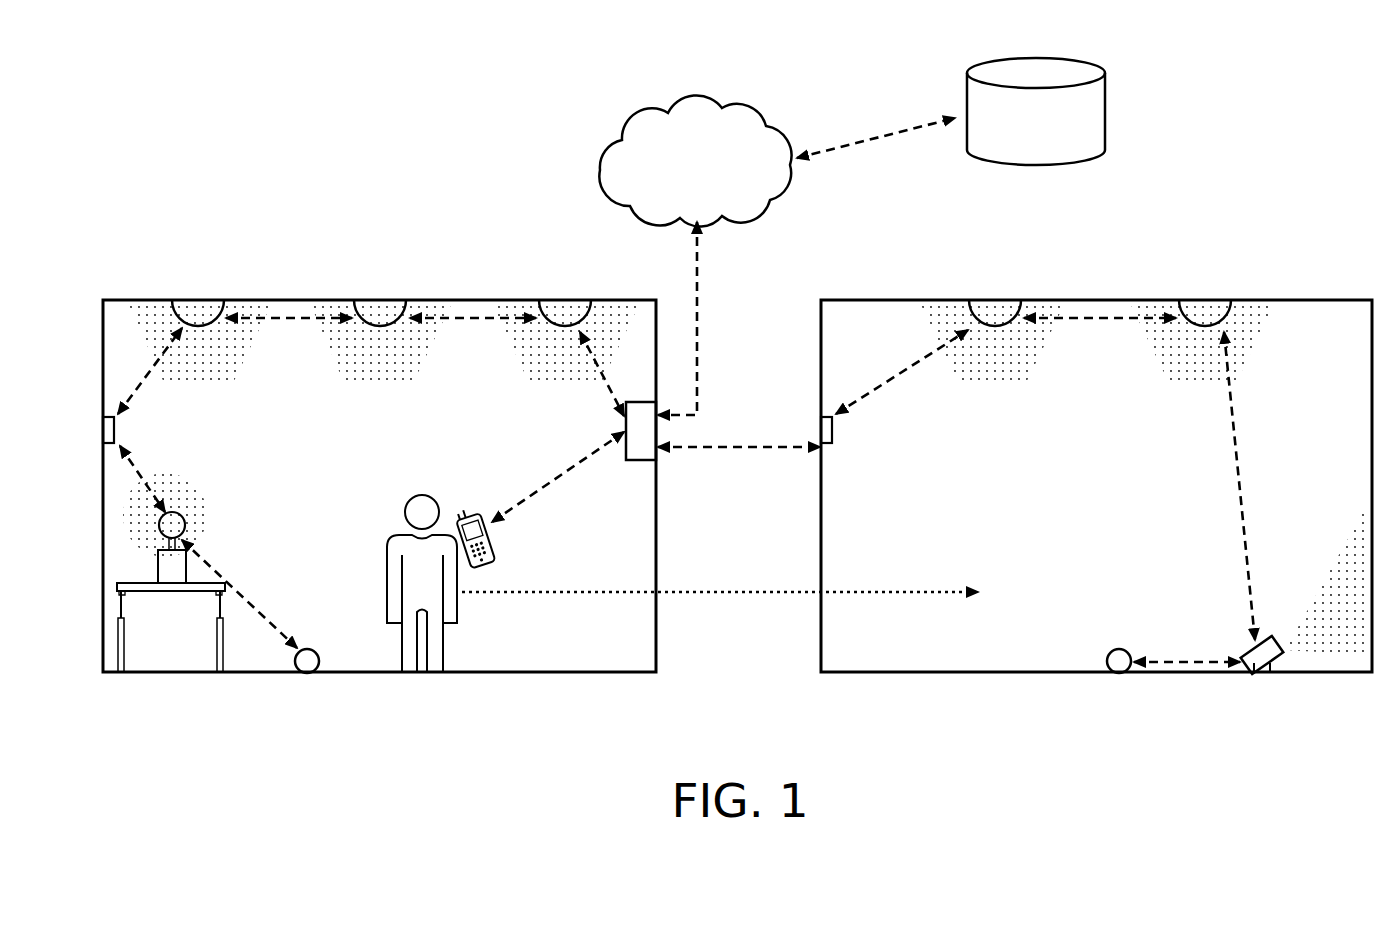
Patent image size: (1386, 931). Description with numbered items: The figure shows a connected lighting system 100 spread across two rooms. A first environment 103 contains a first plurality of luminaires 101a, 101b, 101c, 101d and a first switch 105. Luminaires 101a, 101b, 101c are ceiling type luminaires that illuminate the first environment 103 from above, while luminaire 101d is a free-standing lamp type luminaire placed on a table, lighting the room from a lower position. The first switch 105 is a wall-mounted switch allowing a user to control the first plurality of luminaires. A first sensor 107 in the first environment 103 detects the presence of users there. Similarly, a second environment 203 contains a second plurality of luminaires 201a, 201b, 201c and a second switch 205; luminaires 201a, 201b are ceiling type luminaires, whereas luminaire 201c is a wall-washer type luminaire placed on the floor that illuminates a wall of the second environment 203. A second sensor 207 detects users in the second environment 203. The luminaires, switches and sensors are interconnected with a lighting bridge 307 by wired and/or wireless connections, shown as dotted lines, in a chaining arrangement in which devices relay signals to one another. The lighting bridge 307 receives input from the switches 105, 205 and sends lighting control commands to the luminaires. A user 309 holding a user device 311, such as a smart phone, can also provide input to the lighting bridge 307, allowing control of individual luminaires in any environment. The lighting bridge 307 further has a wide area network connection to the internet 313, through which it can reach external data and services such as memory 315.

The system 100 is at (190, 150).
The luminaire 101a is at (565, 300).
The luminaire 101b is at (380, 300).
The luminaire 101c is at (198, 300).
The luminaire 101d is at (186, 527).
The first environment 103 is at (553, 674).
The first switch 105 is at (114, 430).
The first sensor 107 is at (307, 674).
The luminaire 201a is at (995, 300).
The luminaire 201b is at (1205, 300).
The luminaire 201c is at (1262, 674).
The second environment 203 is at (1003, 674).
The second switch 205 is at (832, 433).
The second sensor 207 is at (1119, 674).
The lighting bridge 307 is at (637, 460).
The user 309 is at (386, 540).
The user device 311 is at (492, 543).
The internet 313 is at (695, 160).
The memory 315 is at (1036, 111).